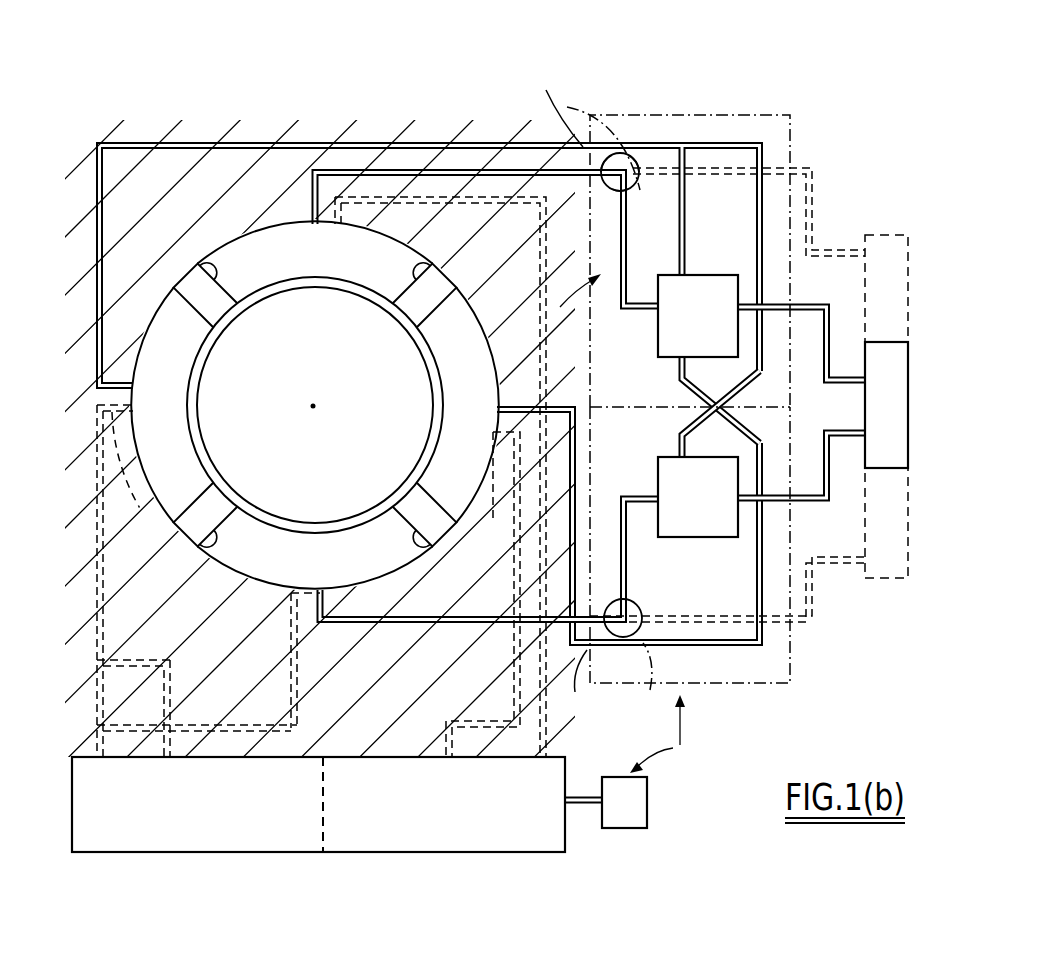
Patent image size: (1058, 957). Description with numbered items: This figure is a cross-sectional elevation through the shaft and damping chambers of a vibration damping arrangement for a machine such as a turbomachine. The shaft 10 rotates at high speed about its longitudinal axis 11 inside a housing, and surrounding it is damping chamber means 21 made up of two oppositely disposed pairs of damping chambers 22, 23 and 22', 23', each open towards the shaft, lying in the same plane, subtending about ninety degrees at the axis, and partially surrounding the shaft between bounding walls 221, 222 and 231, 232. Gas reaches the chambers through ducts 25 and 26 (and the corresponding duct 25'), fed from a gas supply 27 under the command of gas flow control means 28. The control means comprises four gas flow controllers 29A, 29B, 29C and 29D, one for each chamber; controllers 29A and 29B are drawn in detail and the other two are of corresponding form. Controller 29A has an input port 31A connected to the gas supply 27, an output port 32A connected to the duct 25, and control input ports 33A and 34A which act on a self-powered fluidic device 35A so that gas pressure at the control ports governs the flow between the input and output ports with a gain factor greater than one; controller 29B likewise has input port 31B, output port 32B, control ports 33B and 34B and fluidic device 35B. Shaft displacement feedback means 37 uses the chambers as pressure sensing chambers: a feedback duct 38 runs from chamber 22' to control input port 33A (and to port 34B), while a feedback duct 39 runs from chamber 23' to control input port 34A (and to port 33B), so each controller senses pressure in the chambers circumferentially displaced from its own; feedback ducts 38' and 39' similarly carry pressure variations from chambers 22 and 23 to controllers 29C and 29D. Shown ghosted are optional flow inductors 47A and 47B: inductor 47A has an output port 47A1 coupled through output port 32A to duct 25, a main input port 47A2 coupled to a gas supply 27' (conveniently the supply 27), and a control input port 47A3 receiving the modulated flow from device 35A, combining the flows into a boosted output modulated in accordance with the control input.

The shaft 10 is at (332, 387).
The longitudinal axis 11 is at (313, 406).
The damping chamber means 21 is at (326, 284).
The damping chamber 22 is at (315, 245).
The damping chamber 22' is at (155, 405).
The bounding wall 221 is at (211, 268).
The bounding wall 222 is at (418, 267).
The damping chamber 23 is at (315, 562).
The damping chamber 23' is at (475, 405).
The bounding wall 231 is at (212, 566).
The bounding wall 232 is at (416, 570).
The duct 25 is at (315, 320).
The duct 25' is at (133, 581).
The duct 26 is at (492, 510).
The gas supply 27 is at (755, 585).
The gas supply 27' is at (893, 379).
The gas flow control means 28 is at (620, 535).
The gas flow controller 29A is at (801, 108).
The gas flow controller 29B is at (797, 687).
The gas flow controller 29C is at (234, 818).
The gas flow controller 29D is at (438, 818).
The input port 31A is at (788, 298).
The input port 31B is at (791, 505).
The output port 32A is at (585, 177).
The output port 32B is at (640, 582).
The control input port 33A is at (540, 100).
The control input port 33B is at (589, 690).
The control input port 34A is at (697, 395).
The control input port 34B is at (693, 413).
The self-powered fluidic device 35A is at (704, 336).
The self-powered fluidic device 35B is at (704, 518).
The shaft displacement feedback means 37 is at (202, 138).
The feedback duct 38 is at (430, 369).
The feedback duct 38' is at (443, 613).
The feedback duct 39 is at (486, 289).
The feedback duct 39' is at (440, 426).
The flow inductor 47A is at (596, 130).
The inductor output port 47A1 is at (601, 176).
The inductor main input port 47A2 is at (641, 170).
The inductor control input port 47A3 is at (636, 192).
The flow inductor 47B is at (649, 687).